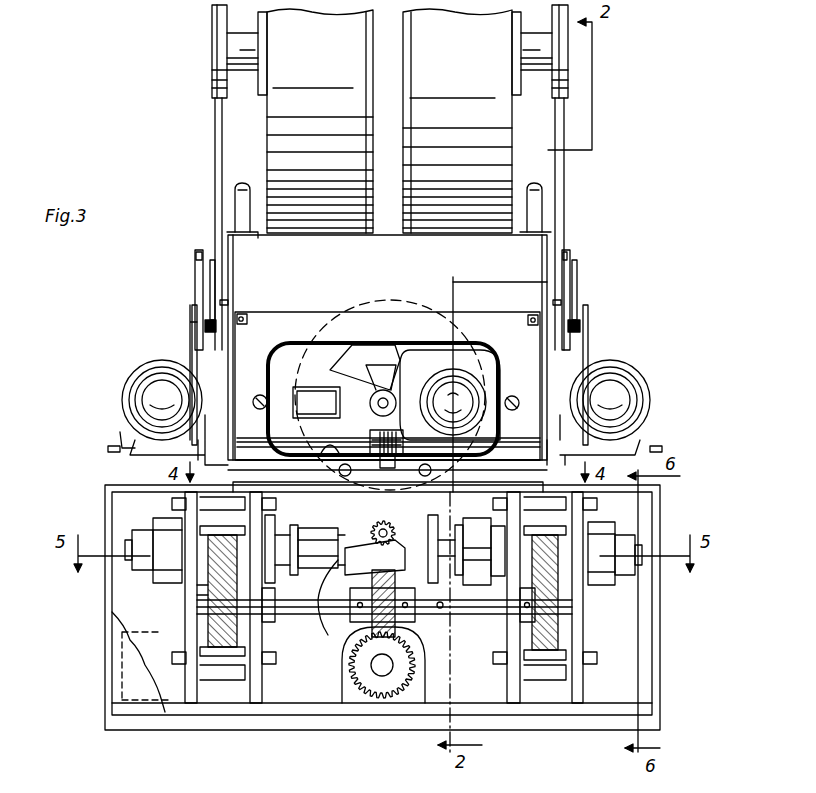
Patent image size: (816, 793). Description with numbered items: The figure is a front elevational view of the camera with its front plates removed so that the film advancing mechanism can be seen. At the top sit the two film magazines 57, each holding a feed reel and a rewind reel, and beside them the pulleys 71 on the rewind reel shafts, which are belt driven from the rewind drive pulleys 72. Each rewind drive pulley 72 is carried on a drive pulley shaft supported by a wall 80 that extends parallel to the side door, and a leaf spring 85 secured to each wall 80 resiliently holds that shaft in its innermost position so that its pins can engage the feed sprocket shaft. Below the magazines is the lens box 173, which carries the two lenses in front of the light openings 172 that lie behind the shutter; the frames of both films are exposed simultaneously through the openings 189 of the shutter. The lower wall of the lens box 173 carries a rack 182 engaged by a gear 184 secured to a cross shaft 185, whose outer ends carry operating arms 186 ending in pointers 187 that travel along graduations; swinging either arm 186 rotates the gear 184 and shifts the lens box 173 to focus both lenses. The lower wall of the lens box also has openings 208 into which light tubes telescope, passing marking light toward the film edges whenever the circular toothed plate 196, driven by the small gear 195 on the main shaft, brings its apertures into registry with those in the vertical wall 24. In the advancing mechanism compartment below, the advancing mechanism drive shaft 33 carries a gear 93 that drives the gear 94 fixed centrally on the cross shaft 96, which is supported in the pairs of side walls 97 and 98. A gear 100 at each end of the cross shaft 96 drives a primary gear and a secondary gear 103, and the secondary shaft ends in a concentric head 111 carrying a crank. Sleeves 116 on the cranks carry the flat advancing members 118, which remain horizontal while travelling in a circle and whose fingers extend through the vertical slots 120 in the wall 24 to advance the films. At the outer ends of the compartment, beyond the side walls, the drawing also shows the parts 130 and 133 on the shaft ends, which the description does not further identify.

The vertical wall 24 is at (300, 348).
The advancing mechanism drive shaft 33 is at (375, 665).
The film magazine 57 is at (392, 60).
The pulley 71 is at (212, 45).
The rewind drive pulley 72 is at (212, 285).
The wall 80 is at (195, 270).
The leaf spring 85 is at (192, 318).
The gear 93 is at (368, 655).
The gear 94 is at (398, 625).
The cross shaft 96 is at (334, 635).
The side wall 97 is at (255, 698).
The side wall 98 is at (190, 698).
The gear 100 is at (215, 605).
The secondary gear 103 is at (232, 530).
The concentric head 111 is at (382, 607).
The sleeve 116 is at (350, 562).
The advancing member 118 is at (386, 593).
The vertical slot 120 is at (345, 590).
The clutch member 130 is at (165, 520).
The clutch member 133 is at (140, 535).
The opening 172 is at (298, 388).
The lens box 173 is at (258, 326).
The rack 182 is at (316, 402).
The gear 184 is at (384, 390).
The cross shaft 185 is at (470, 398).
The operating arm 186 is at (192, 338).
The pointer 187 is at (222, 302).
The opening 189 is at (352, 372).
The small gear 195 is at (370, 548).
The circular toothed plate 196 is at (372, 525).
The opening 208 is at (338, 472).